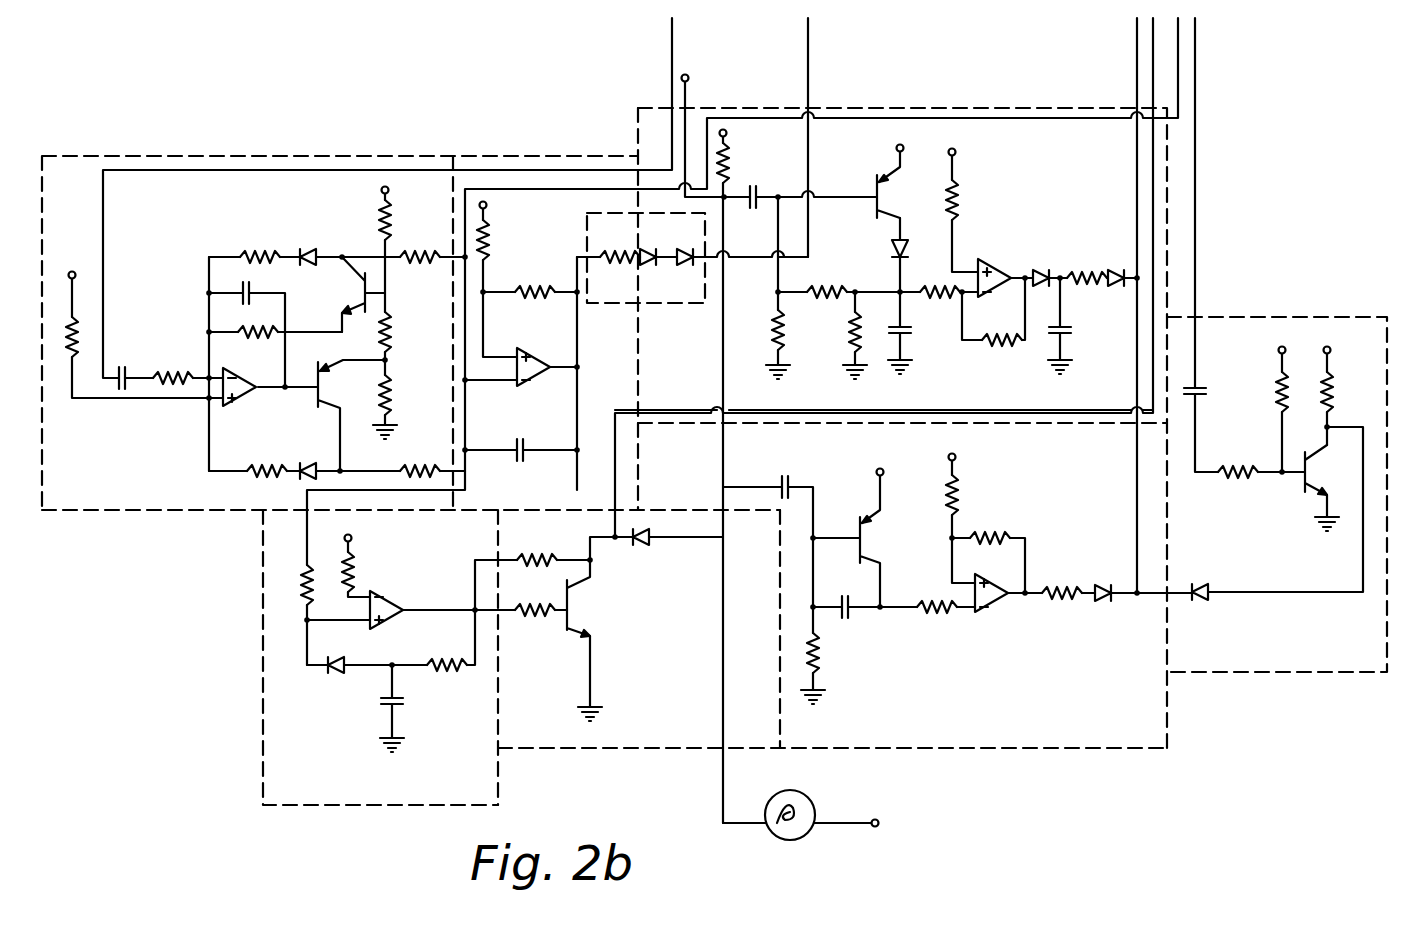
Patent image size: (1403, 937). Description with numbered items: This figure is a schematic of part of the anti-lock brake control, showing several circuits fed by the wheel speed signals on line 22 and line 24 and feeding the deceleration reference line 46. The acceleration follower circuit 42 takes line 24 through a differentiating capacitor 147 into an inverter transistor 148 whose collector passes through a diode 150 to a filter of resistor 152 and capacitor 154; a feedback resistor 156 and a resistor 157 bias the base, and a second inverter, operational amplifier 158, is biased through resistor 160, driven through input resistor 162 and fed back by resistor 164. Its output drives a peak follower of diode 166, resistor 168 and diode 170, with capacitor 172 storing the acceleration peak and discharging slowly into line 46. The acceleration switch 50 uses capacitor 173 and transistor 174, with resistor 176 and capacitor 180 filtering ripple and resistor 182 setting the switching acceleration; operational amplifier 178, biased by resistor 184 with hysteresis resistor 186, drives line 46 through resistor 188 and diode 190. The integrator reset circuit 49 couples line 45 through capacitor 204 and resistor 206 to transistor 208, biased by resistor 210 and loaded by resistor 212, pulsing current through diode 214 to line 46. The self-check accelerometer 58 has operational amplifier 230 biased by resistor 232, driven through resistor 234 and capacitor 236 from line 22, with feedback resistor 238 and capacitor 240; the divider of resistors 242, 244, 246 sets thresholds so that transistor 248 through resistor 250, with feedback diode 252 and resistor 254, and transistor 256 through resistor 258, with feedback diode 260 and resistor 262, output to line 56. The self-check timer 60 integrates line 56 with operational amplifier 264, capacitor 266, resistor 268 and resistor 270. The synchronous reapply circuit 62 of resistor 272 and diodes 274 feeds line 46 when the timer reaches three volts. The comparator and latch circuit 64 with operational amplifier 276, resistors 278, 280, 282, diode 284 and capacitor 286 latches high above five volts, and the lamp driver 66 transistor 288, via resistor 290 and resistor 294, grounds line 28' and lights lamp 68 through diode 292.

The line 22 is at (672, 57).
The line 24 is at (690, 78).
The line 28' is at (868, 277).
The acceleration follower circuit 42 is at (960, 108).
The line 45 is at (1195, 217).
The line 46 is at (808, 62).
The integrator reset circuit 49 is at (1258, 317).
The acceleration switch 50 is at (1030, 750).
The line 56 is at (1180, 77).
The self-check accelerometer 58 is at (205, 155).
The self-check timer 60 is at (530, 155).
The synchronous reapply circuit 62 is at (657, 306).
The comparator and latch circuit 64 is at (262, 600).
The lamp driver 66 is at (650, 752).
The lamp 68 is at (810, 807).
The differentiating capacitor 147 is at (757, 190).
The transistor 148 is at (887, 196).
The diode 150 is at (888, 247).
The resistor 152 is at (853, 313).
The capacitor 154 is at (910, 334).
The feedback resistor 156 is at (832, 290).
The resistor 157 is at (767, 328).
The operational amplifier 158 is at (998, 260).
The resistor 160 is at (953, 203).
The input resistor 162 is at (947, 300).
The feedback resistor 164 is at (987, 347).
The diode 166 is at (1038, 270).
The resistor 168 is at (1085, 268).
The diode 170 is at (1123, 288).
The capacitor 172 is at (1070, 340).
The differentiating capacitor 173 is at (778, 485).
The transistor 174 is at (870, 526).
The resistor 176 is at (923, 614).
The operational amplifier 178 is at (993, 600).
The capacitor 180 is at (853, 614).
The resistor 182 is at (822, 657).
The resistor 184 is at (963, 497).
The feedback resistor 186 is at (980, 533).
The resistor 188 is at (1052, 583).
The diode 190 is at (1103, 580).
The capacitor 204 is at (1205, 386).
The resistor 206 is at (1243, 482).
The transistor 208 is at (1303, 478).
The bias resistor 210 is at (1277, 382).
The resistor 212 is at (1328, 374).
The diode 214 is at (1212, 587).
The operational amplifier 230 is at (247, 394).
The resistor 232 is at (71, 362).
The resistor 234 is at (164, 371).
The differentiating capacitor 236 is at (118, 367).
The feedback resistor 238 is at (244, 338).
The capacitor 240 is at (253, 288).
The resistor 242 is at (388, 230).
The resistor 244 is at (390, 330).
The resistor 246 is at (392, 398).
The transistor 248 is at (326, 394).
The resistor 250 is at (413, 465).
The diode 252 is at (313, 464).
The resistor 254 is at (267, 464).
The second transistor 256 is at (358, 304).
The resistor 258 is at (413, 264).
The diode 260 is at (325, 214).
The resistor 262 is at (254, 253).
The operational amplifier 264 is at (538, 350).
The integrating feedback capacitor 266 is at (523, 460).
The positive feedback resistor 268 is at (521, 288).
The resistor 270 is at (488, 238).
The current limiting resistor 272 is at (617, 252).
The diodes 274 is at (673, 262).
The operational amplifier 276 is at (399, 594).
The resistor 278 is at (350, 567).
The resistor 280 is at (306, 570).
The resistor 282 is at (438, 675).
The diode 284 is at (330, 672).
The capacitor 286 is at (383, 710).
The transistor 288 is at (587, 615).
The resistor 290 is at (527, 614).
The diode 292 is at (655, 545).
The resistor 294 is at (545, 557).